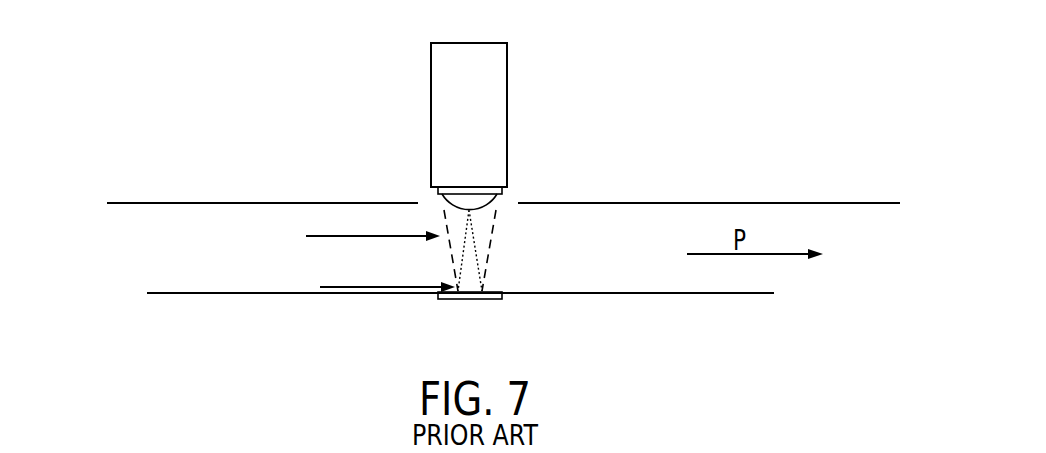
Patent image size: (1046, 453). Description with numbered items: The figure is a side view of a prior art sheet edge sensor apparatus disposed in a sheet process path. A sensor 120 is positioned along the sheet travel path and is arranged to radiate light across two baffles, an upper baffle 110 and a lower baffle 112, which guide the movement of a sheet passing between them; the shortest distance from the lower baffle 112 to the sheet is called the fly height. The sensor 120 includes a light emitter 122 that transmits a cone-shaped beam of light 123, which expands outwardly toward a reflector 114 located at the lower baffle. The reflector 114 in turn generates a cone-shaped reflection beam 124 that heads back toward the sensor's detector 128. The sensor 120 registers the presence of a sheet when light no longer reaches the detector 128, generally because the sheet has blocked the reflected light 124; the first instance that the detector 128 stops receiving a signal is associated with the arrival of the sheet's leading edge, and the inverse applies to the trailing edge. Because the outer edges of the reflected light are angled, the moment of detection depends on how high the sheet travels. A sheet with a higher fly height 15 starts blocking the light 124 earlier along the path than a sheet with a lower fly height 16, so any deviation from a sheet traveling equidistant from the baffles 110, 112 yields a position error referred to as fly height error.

The upper baffle 110 is at (182, 203).
The lower baffle 112 is at (222, 293).
The reflector 114 is at (466, 300).
The sensor 120 is at (507, 83).
The light emitter 122 is at (478, 201).
The cone-shaped beam of light 123 is at (475, 242).
The cone-shaped reflection beam 124 is at (498, 266).
The detector 128 is at (437, 200).
The higher fly height 15 is at (345, 235).
The lower fly height 16 is at (338, 293).